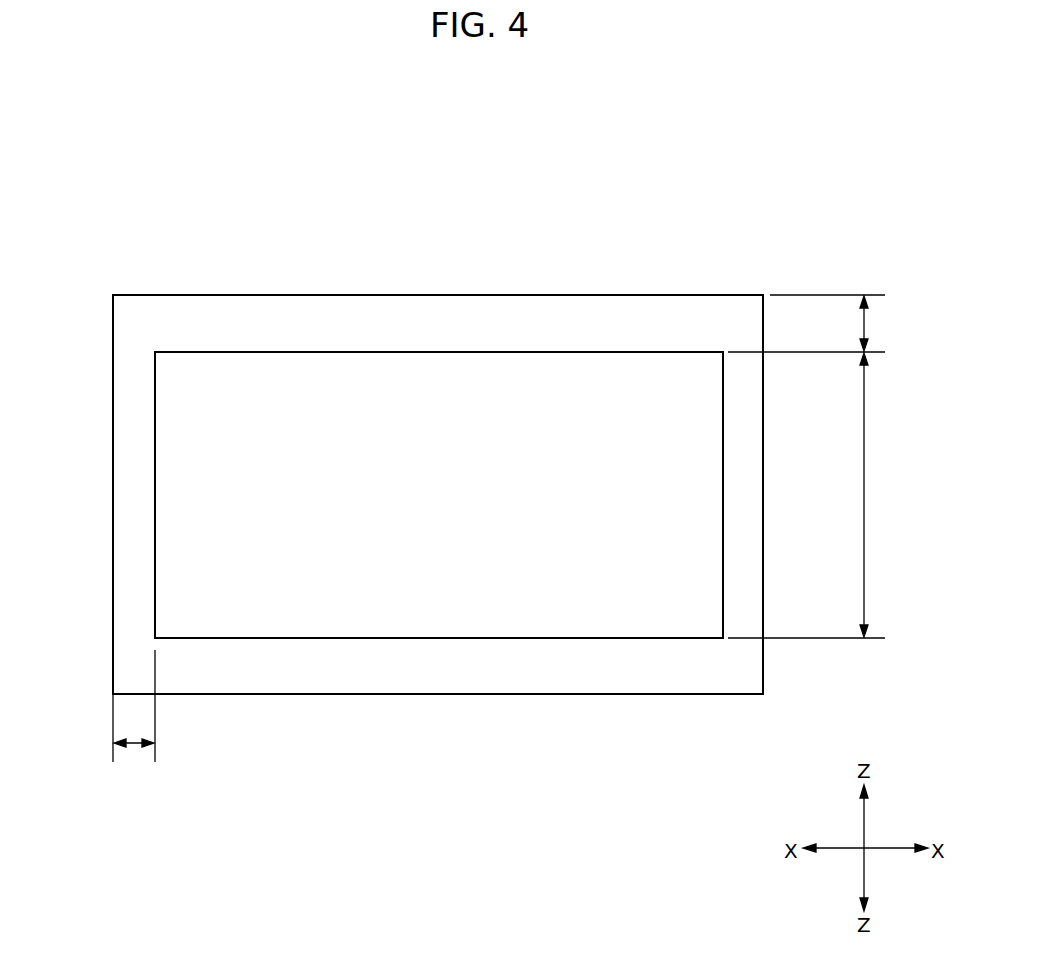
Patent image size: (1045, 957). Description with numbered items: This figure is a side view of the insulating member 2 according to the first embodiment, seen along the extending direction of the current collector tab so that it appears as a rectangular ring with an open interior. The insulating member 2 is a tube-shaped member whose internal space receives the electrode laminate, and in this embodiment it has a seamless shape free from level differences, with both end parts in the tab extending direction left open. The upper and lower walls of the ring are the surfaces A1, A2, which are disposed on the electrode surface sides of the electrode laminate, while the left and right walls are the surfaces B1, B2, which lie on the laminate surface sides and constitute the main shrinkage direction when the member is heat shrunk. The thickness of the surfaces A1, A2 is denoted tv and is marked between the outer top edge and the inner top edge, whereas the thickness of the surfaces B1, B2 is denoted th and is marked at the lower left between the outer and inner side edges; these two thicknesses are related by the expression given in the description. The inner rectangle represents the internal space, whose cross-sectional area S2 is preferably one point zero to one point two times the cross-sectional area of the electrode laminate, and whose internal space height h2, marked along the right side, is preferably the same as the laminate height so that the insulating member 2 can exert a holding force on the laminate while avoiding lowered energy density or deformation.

The insulating member 2 is at (684, 174).
The cross-sectional area of the internal space S2 is at (439, 495).
The surface A1 is at (407, 295).
The surface A2 is at (425, 694).
The surface B1 is at (113, 507).
The surface B2 is at (764, 505).
The thickness of surfaces A1, A2 tv is at (810, 323).
The internal space height h2 is at (813, 495).
The thickness of surfaces B1, B2 th is at (134, 722).